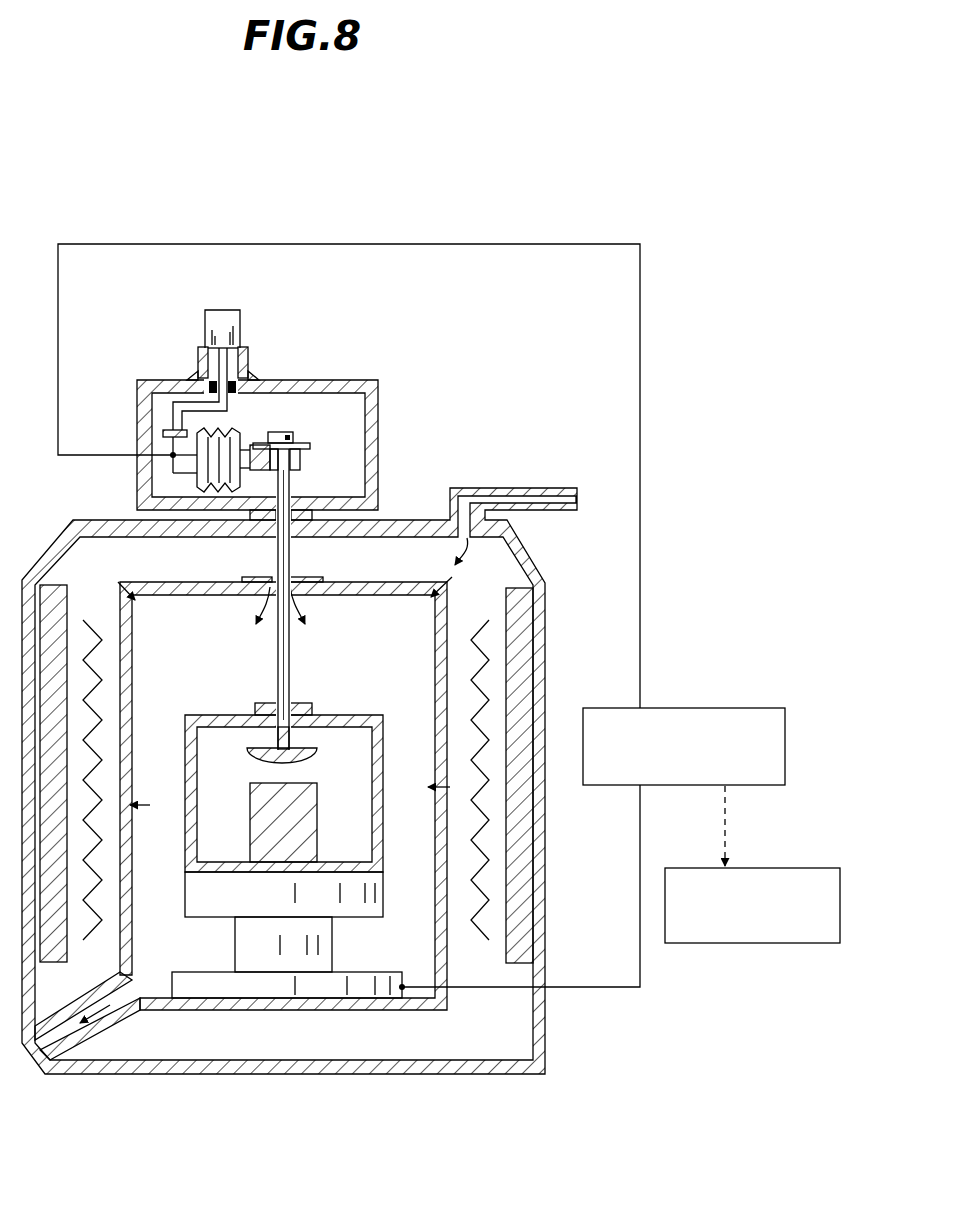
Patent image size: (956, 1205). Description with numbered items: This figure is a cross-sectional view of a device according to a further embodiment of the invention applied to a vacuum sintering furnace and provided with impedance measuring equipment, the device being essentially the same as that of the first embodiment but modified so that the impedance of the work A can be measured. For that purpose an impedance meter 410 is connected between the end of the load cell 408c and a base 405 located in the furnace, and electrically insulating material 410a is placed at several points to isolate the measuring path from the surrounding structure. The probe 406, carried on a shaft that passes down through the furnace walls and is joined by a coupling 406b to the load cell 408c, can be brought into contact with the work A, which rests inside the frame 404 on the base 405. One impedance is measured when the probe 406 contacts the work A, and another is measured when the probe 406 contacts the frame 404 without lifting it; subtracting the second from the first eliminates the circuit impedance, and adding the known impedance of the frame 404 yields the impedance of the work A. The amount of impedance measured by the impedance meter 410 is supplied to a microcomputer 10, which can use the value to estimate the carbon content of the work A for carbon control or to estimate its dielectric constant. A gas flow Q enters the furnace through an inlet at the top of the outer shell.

The impedance meter 410 is at (663, 708).
The electrically insulating material 410a is at (166, 431).
The probe 406 is at (291, 679).
The shaft coupling 406b is at (282, 432).
The load cell 408c is at (217, 489).
The frame 404 is at (372, 710).
The base 405 is at (334, 937).
The work A is at (251, 826).
The microcomputer 10 is at (750, 944).
The gas flow Q is at (617, 498).